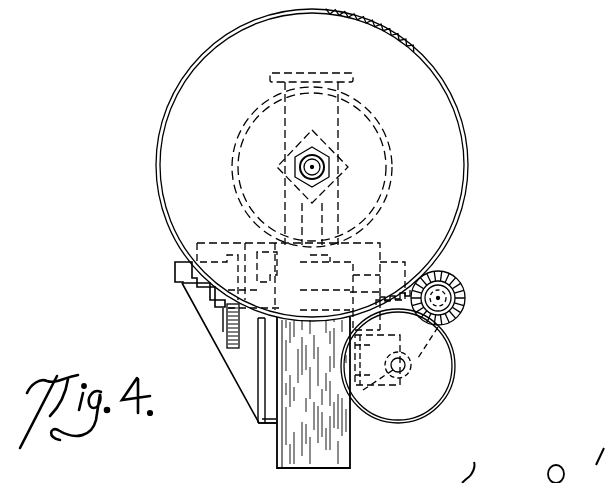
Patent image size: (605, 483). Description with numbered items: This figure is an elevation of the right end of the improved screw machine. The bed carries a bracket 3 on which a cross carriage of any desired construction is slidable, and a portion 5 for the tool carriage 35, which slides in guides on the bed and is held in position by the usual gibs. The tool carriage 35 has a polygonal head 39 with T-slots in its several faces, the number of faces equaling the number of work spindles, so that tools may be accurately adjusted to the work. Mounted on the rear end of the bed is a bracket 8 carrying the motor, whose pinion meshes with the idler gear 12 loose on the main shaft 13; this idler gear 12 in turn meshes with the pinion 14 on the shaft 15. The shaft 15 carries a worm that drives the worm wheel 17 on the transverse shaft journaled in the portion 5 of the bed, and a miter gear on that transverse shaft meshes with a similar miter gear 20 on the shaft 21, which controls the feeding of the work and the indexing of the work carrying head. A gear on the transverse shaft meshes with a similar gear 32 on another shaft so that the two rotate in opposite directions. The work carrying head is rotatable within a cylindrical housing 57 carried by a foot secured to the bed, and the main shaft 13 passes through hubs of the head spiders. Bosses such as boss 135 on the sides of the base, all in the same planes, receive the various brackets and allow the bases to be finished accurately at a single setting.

The bracket 3 is at (180, 277).
The portion for the tool carriage 5 is at (309, 343).
The bracket 8 is at (334, 118).
The idler gear 12 is at (427, 72).
The main shaft 13 is at (308, 171).
The pinion 14 is at (450, 353).
The shaft 15 is at (400, 370).
The worm wheel 17 is at (408, 254).
The miter gear 20 is at (466, 298).
The shaft 21 is at (440, 297).
The gear 32 is at (232, 341).
The tool carriage 35 is at (417, 228).
The polygonal head 39 is at (342, 167).
The cylindrical housing 57 is at (380, 200).
The boss 135 is at (268, 440).